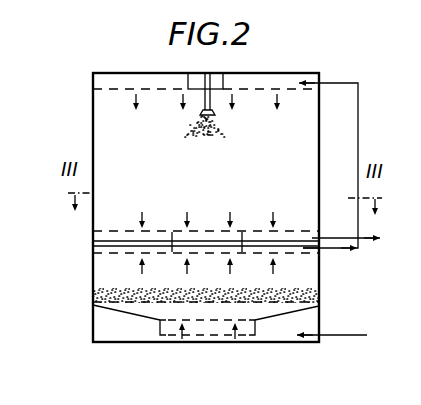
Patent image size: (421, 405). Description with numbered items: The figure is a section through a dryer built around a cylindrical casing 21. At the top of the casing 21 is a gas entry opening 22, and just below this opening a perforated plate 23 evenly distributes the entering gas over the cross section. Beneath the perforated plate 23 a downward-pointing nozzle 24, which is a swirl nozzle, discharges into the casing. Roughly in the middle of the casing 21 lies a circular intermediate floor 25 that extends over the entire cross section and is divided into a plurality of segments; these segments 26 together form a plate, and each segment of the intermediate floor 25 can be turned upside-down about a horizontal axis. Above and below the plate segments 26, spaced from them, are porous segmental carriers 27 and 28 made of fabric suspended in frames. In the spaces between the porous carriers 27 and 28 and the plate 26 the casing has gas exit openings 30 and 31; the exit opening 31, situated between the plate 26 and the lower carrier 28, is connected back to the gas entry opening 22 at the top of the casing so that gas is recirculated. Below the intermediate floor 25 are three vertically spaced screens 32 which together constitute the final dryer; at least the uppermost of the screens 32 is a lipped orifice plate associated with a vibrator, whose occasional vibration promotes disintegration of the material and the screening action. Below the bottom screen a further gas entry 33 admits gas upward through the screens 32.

The cylindrical casing 21 is at (92, 134).
The gas entry opening 22 is at (323, 82).
The perforated plate 23 is at (121, 91).
The nozzle 24 is at (213, 112).
The intermediate floor 25 is at (92, 239).
The segments 26 is at (90, 242).
The porous segmental carrier 27 is at (122, 230).
The porous segmental carrier 28 is at (125, 255).
The gas exit opening 30 is at (318, 238).
The gas exit opening 31 is at (322, 250).
The screens 32 is at (202, 306).
The gas entry 33 is at (346, 336).